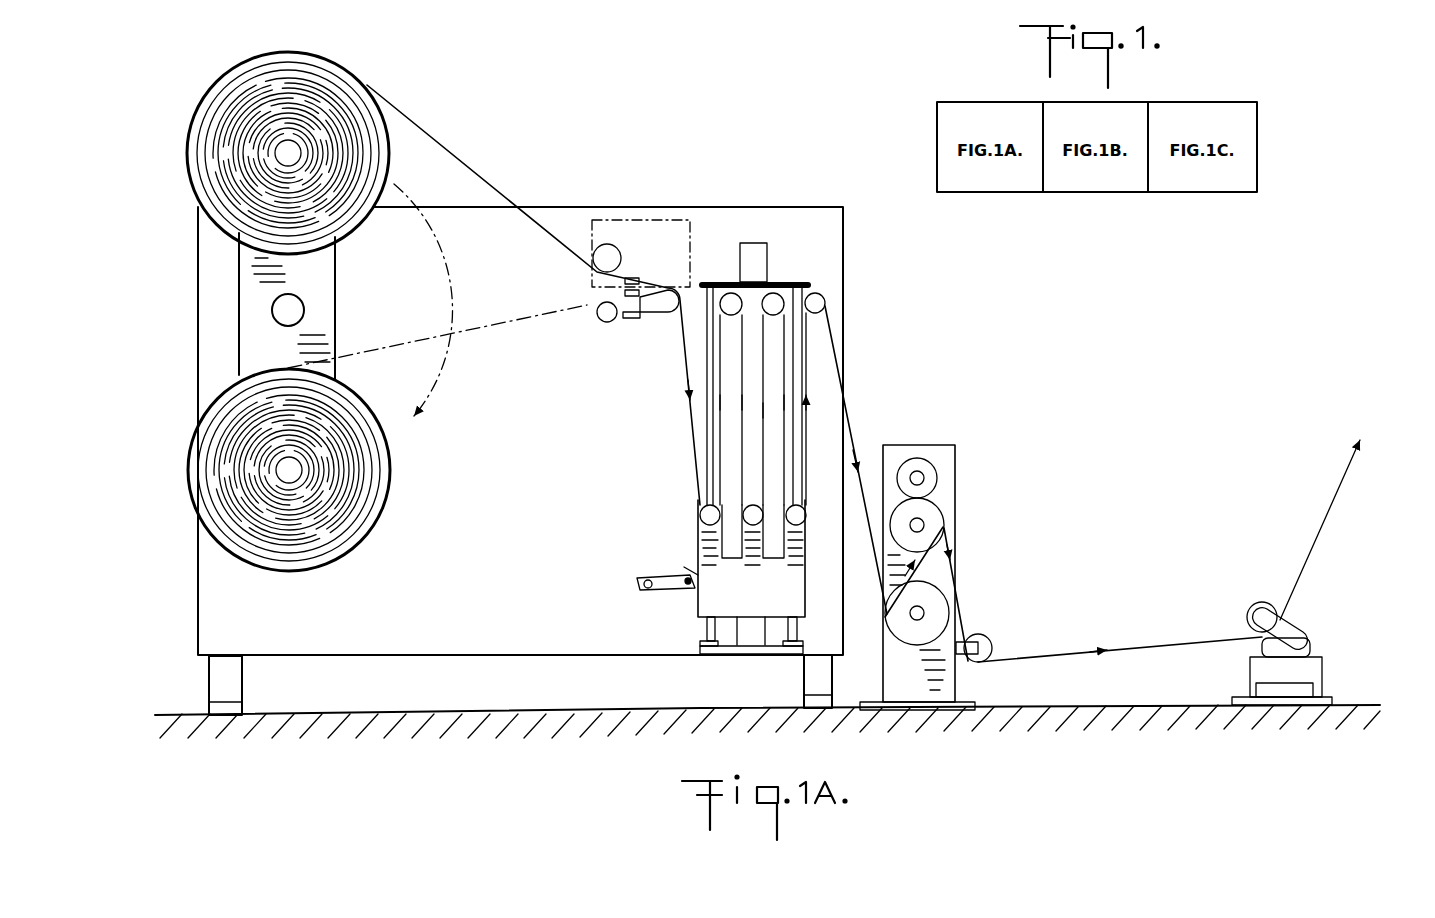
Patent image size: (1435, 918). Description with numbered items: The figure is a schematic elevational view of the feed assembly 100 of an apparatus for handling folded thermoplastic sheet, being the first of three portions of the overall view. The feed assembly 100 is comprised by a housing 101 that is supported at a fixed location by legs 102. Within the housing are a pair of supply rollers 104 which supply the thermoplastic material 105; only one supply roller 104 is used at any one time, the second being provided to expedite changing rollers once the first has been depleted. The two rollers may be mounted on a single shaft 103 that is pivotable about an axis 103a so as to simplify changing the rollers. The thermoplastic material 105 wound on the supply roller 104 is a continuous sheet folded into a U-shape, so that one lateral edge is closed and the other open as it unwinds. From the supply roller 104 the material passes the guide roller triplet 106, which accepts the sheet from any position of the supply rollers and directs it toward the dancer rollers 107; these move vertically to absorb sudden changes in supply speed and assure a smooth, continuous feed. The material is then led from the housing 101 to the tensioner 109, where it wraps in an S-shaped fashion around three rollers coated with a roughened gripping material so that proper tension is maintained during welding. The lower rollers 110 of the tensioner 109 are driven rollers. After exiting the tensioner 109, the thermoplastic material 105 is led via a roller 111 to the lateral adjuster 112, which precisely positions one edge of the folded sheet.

The feed assembly 100 is at (811, 141).
The housing 101 is at (224, 611).
The legs 102 is at (243, 683).
The single shaft 103 is at (335, 270).
The axis 103a is at (304, 313).
The supply rollers 104 is at (222, 78).
The thermoplastic material 105 is at (553, 237).
The guide roller triplet 106 is at (646, 253).
The dancer rollers 107 is at (789, 272).
The tensioner 109 is at (965, 433).
The lower rollers 110 is at (942, 595).
The roller 111 is at (990, 636).
The lateral adjuster 112 is at (1258, 592).